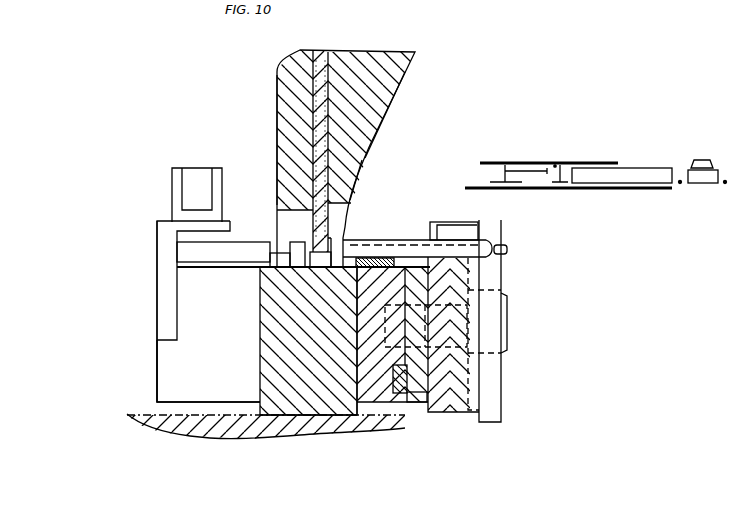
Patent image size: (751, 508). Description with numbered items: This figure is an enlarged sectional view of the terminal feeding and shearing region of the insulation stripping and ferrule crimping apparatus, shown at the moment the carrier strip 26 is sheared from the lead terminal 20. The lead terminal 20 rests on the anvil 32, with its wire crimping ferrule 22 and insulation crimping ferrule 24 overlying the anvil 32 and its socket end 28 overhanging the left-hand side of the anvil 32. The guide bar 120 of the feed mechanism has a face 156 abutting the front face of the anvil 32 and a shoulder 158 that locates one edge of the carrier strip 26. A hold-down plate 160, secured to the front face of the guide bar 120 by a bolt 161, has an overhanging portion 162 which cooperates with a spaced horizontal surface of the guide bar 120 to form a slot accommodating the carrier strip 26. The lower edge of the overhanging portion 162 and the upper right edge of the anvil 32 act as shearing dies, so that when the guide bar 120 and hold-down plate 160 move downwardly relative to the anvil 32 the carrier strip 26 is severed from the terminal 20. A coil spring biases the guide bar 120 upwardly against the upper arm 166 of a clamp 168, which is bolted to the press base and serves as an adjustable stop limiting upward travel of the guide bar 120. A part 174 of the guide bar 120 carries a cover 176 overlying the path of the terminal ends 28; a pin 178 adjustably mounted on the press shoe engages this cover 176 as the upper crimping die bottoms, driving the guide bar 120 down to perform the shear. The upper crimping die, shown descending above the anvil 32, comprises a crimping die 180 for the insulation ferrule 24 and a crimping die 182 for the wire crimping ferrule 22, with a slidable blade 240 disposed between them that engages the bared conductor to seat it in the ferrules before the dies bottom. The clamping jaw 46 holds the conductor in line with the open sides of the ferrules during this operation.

The strip terminal 20 is at (197, 281).
The wire crimping ferrule 22 is at (302, 248).
The insulation crimping ferrule 24 is at (355, 228).
The carrier strip 26 is at (345, 288).
The terminal end 28 is at (200, 256).
The anvil 32 is at (320, 380).
The clamping jaw 46 is at (500, 257).
The guide bar 120 is at (377, 395).
The face of the guide bar 156 is at (357, 378).
The shoulder 158 is at (308, 341).
The hold-down plate 160 is at (420, 372).
The bolt 161 is at (515, 327).
The overhanging portion 162 is at (404, 190).
The upper arm of the clamp 166 is at (463, 222).
The clamp 168 is at (495, 283).
The part of the guide bar 174 is at (163, 372).
The cover 176 is at (158, 232).
The pin 178 is at (172, 182).
The crimping die for the insulation ferrule 180 is at (368, 160).
The crimping die for the wire crimping ferrule 182 is at (296, 212).
The blade 240 is at (322, 97).